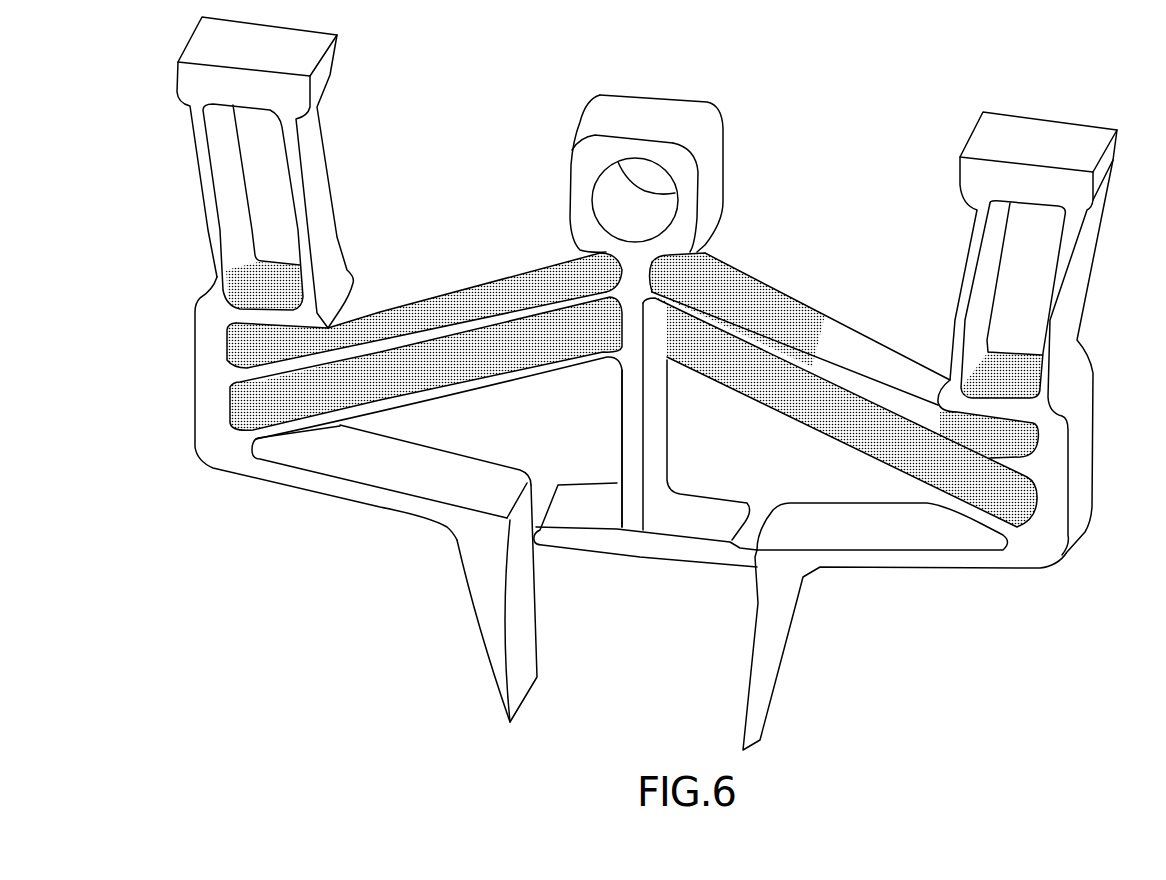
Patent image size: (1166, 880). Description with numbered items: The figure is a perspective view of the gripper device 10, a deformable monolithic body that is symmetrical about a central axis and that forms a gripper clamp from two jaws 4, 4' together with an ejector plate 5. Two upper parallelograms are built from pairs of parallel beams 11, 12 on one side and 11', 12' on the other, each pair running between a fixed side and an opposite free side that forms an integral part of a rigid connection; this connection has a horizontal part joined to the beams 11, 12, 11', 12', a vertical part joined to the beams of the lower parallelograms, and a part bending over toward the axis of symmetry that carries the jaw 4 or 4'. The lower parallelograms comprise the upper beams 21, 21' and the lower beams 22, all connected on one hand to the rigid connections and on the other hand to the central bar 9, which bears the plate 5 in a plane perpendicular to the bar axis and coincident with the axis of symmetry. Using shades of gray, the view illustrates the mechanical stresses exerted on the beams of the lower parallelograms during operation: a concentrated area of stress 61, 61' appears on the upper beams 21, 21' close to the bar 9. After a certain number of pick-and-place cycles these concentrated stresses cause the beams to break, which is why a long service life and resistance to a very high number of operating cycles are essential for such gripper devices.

The profile body 10 is at (230, 542).
The beam 11 is at (238, 172).
The beam 12 is at (352, 181).
The beam 11' is at (1014, 333).
The beam 12' is at (1119, 205).
The upper beam 21 is at (416, 295).
The upper beam 21' is at (801, 316).
The beam 22 is at (463, 390).
The concentrated area of stress 61 is at (595, 193).
The concentrated area of stress 61' is at (692, 193).
The bar 9 is at (620, 397).
The ejector plate 5 is at (623, 557).
The jaw 4 is at (482, 603).
The jaw 4' is at (928, 455).